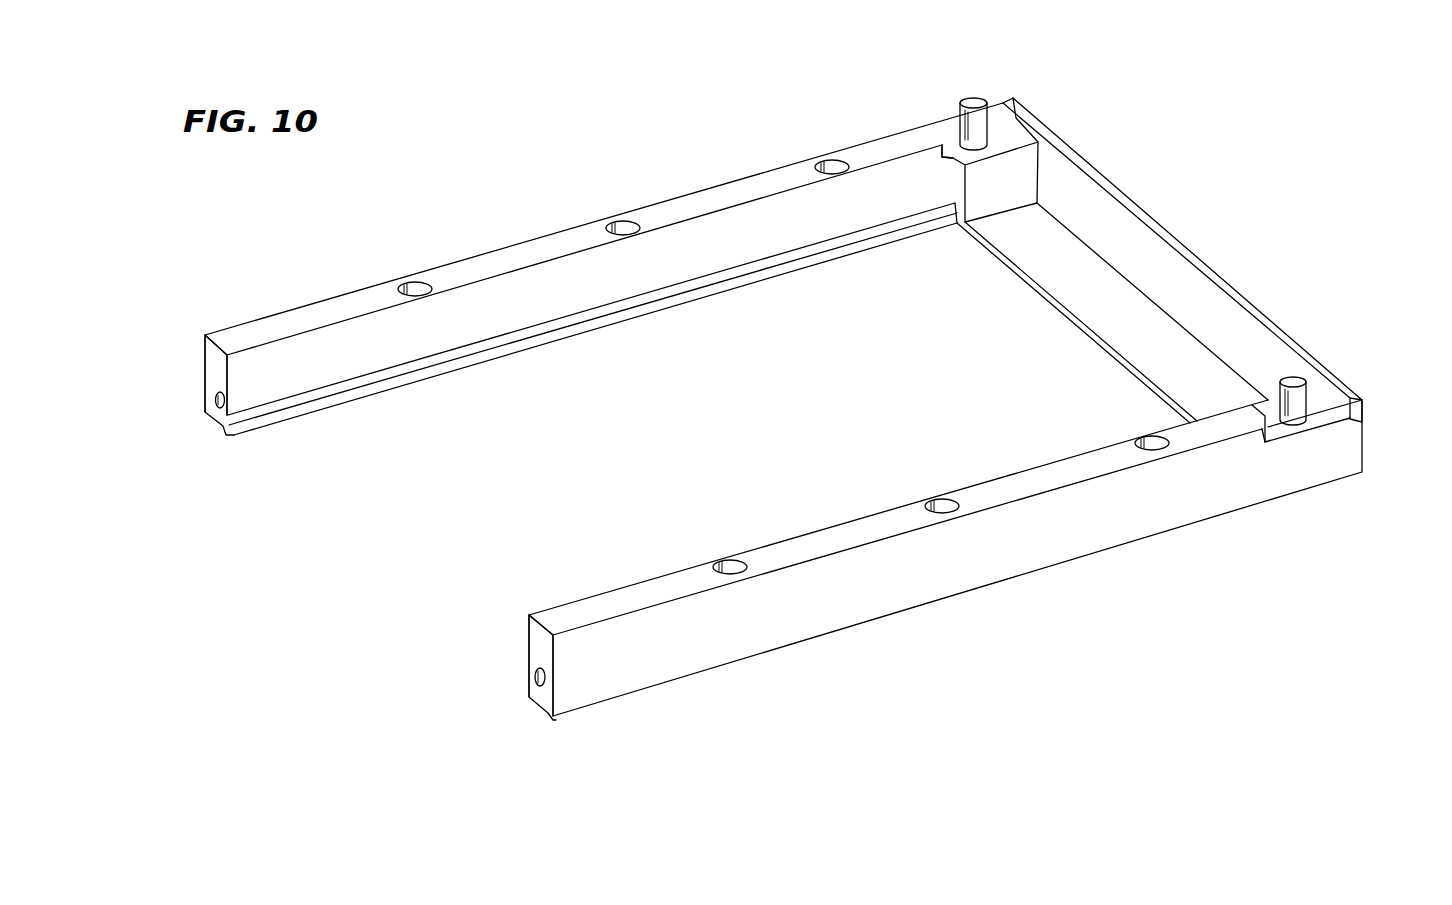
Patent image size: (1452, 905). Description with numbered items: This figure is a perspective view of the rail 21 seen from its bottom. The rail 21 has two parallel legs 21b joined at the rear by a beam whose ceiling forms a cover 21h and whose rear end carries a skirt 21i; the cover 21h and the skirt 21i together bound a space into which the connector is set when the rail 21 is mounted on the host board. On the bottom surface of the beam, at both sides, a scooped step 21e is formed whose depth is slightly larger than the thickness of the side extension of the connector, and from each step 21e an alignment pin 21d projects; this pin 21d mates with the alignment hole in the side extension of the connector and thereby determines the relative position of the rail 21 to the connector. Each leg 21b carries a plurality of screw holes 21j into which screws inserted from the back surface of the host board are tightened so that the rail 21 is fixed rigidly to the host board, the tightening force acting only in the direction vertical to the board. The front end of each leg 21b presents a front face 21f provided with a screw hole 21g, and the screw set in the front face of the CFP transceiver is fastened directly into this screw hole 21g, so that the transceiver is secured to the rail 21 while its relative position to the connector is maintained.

The rail 21 is at (866, 224).
The leg 21b is at (498, 262).
The alignment pin 21d is at (975, 97).
The scooped step 21e is at (945, 137).
The front face 21f is at (213, 370).
The screw hole 21g is at (212, 402).
The cover 21h is at (1055, 275).
The skirt 21i is at (1143, 208).
The screw hole 21j is at (622, 228).